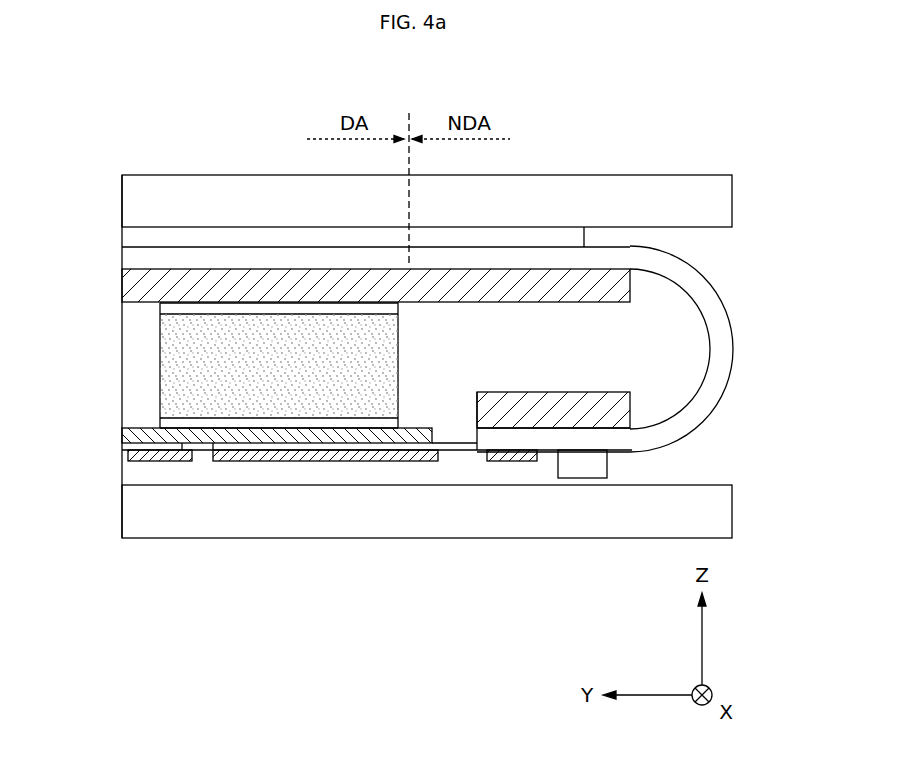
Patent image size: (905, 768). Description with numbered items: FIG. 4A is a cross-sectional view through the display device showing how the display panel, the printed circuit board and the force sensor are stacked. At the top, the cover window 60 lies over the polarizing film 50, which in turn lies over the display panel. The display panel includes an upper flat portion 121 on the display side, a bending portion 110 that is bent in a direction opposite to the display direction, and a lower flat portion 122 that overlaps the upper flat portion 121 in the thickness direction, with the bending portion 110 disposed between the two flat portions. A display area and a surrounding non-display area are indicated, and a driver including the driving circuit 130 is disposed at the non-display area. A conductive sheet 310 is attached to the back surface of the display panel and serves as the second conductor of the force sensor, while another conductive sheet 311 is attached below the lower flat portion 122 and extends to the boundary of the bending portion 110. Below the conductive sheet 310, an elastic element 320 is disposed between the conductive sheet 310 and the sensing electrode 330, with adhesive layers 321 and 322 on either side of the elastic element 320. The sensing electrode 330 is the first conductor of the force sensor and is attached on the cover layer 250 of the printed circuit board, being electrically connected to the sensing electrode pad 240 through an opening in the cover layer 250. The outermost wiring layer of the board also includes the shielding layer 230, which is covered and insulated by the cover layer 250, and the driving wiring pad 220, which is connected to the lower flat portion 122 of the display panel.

The cover window 60 is at (138, 202).
The polarizing film 50 is at (140, 236).
The bending portion 110 is at (722, 350).
The upper flat portion 121 is at (598, 262).
The lower flat portion 122 is at (612, 437).
The driving circuit 130 is at (580, 470).
The conductive sheet 310 is at (140, 288).
The conductive sheet 311 is at (642, 405).
The elastic element 320 is at (160, 354).
The adhesive layer 321 is at (162, 313).
The adhesive layer 322 is at (152, 420).
The sensing electrode 330 is at (145, 443).
The driving wiring pad 220 is at (513, 462).
The shielding layer 230 is at (287, 462).
The sensing electrode pad 240 is at (160, 462).
The cover layer 250 is at (202, 450).